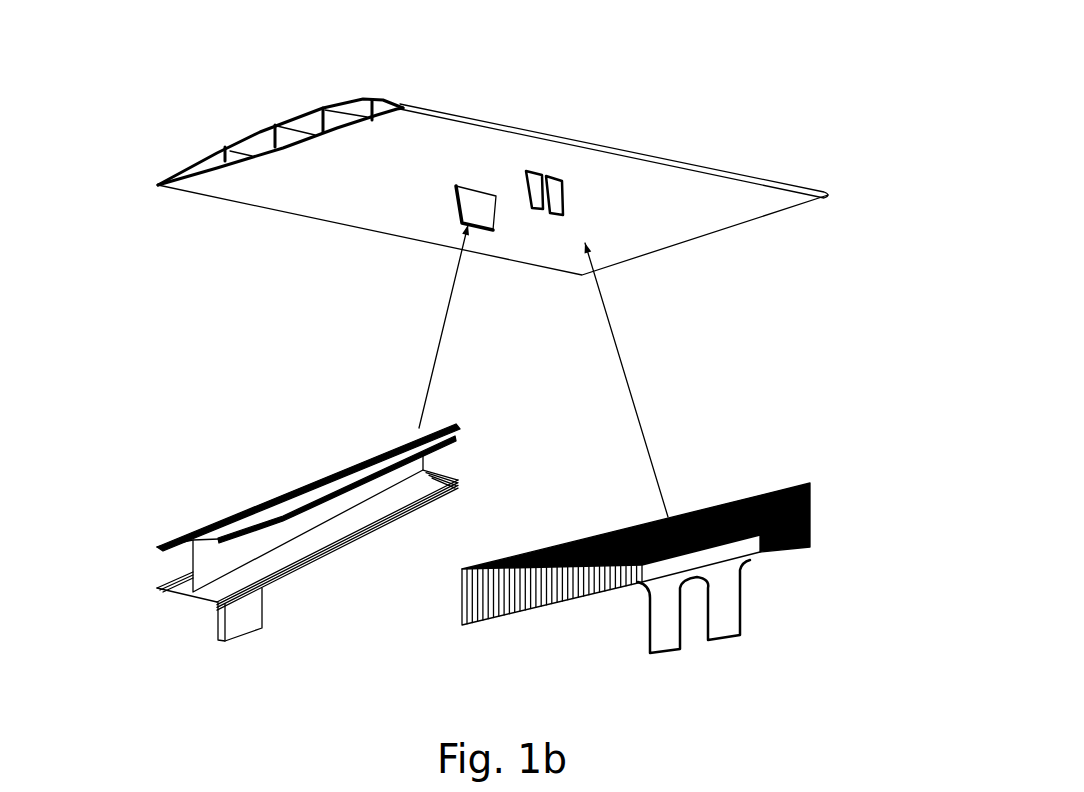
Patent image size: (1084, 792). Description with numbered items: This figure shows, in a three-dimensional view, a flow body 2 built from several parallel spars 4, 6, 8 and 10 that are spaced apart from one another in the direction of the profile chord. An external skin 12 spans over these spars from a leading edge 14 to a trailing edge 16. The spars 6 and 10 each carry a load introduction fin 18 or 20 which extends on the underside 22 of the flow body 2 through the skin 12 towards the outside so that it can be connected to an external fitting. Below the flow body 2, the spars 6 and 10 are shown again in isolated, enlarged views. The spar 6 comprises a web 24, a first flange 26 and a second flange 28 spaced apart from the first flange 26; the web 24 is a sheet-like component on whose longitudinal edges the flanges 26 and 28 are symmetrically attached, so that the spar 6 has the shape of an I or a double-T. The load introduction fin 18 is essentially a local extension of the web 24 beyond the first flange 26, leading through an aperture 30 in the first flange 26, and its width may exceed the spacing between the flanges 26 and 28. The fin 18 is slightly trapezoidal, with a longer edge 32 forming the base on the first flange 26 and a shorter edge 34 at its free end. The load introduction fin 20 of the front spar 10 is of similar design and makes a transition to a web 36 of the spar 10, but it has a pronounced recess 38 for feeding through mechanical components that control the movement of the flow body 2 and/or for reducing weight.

The flow body 2 is at (427, 104).
The spar 4 is at (228, 147).
The spar 6 is at (278, 125).
The spar 8 is at (325, 108).
The front spar 10 is at (372, 100).
The external skin 12 is at (474, 113).
The leading edge 14 is at (789, 218).
The trailing edge 16 is at (155, 193).
The load introduction fin 18 is at (468, 210).
The load introduction fin 20 is at (557, 193).
The underside 22 is at (651, 241).
The web 24 is at (318, 515).
The first flange 26 is at (280, 563).
The second flange 28 is at (335, 460).
The aperture 30 is at (478, 182).
The longer edge 32 is at (481, 206).
The shorter edge 34 is at (480, 236).
The web 36 is at (567, 542).
The recess 38 is at (695, 640).